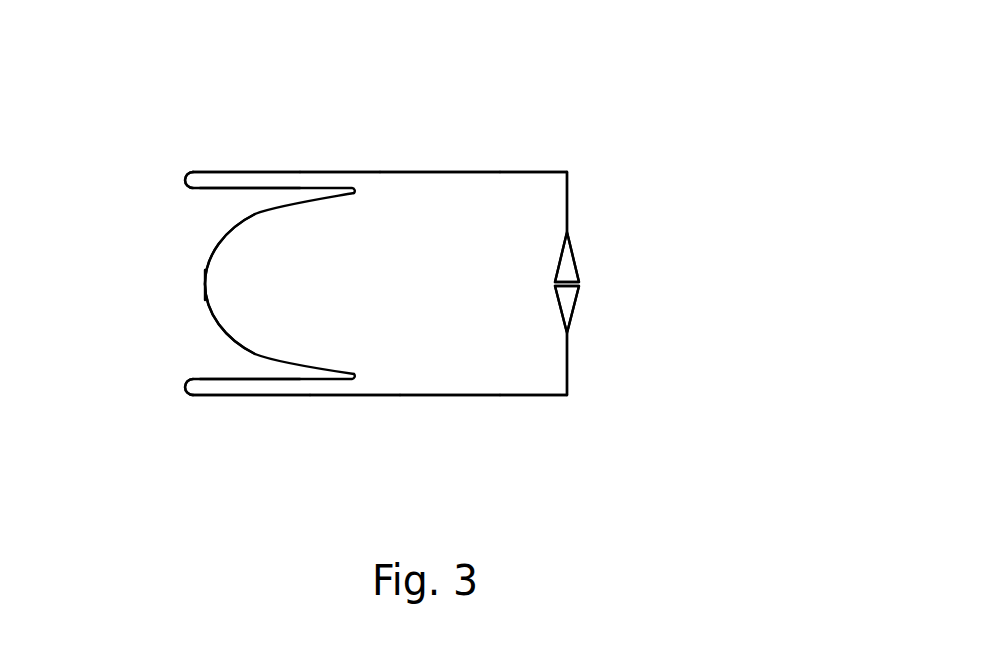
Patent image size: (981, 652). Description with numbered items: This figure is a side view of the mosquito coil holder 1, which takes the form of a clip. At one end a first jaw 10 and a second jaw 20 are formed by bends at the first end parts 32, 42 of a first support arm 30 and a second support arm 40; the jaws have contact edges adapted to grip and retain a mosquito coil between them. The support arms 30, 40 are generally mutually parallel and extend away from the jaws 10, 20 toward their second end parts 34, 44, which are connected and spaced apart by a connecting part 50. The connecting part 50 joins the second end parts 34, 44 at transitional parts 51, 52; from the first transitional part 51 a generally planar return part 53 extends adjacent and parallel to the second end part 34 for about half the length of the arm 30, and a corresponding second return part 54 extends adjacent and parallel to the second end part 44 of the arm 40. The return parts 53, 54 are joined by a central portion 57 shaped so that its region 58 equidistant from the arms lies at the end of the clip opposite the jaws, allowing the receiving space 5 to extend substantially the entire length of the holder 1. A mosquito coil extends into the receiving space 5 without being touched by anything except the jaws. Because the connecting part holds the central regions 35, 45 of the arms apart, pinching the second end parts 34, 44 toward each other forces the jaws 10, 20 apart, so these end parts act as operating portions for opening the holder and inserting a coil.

The mosquito coil holder 1 is at (382, 107).
The receiving space 5 is at (330, 310).
The first jaw 10 is at (567, 200).
The second jaw 20 is at (567, 366).
The first support arm 30 is at (432, 172).
The first end part of the first support arm 32 is at (522, 172).
The second end part of the first support arm 34 is at (220, 170).
The central region of the first support arm 35 is at (358, 172).
The second support arm 40 is at (450, 395).
The first end part of the second support arm 42 is at (515, 395).
The second end part of the second support arm 44 is at (272, 395).
The central region of the second support arm 45 is at (353, 395).
The connecting part 50 is at (194, 315).
The first transitional part 51 is at (185, 180).
The second transitional part 52 is at (187, 387).
The first return part 53 is at (232, 190).
The second return part 54 is at (233, 377).
The central portion 57 is at (225, 235).
The region equidistant from the support arms 58 is at (205, 285).